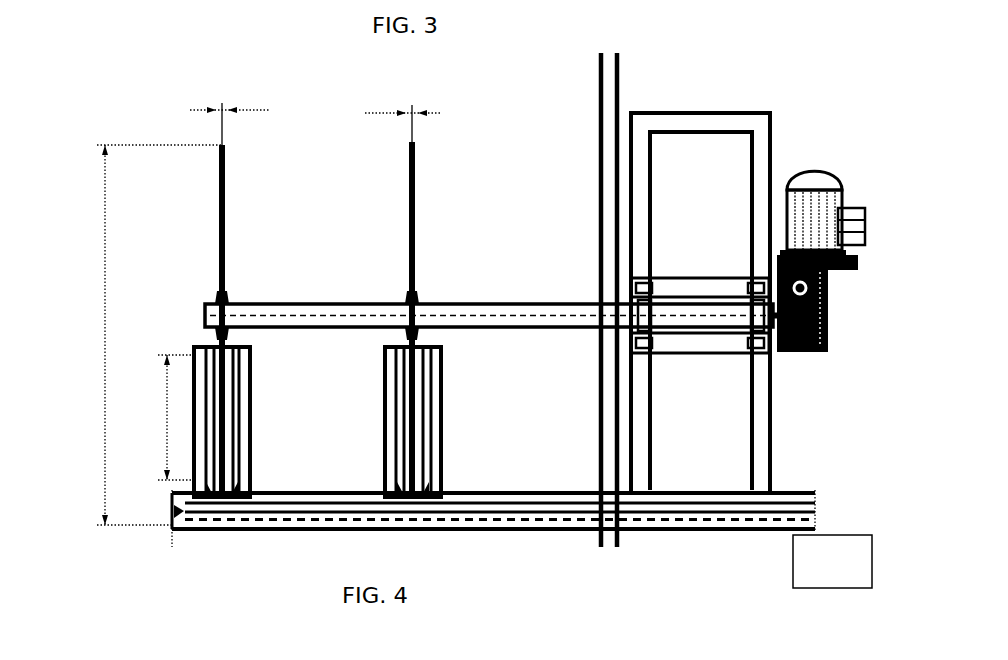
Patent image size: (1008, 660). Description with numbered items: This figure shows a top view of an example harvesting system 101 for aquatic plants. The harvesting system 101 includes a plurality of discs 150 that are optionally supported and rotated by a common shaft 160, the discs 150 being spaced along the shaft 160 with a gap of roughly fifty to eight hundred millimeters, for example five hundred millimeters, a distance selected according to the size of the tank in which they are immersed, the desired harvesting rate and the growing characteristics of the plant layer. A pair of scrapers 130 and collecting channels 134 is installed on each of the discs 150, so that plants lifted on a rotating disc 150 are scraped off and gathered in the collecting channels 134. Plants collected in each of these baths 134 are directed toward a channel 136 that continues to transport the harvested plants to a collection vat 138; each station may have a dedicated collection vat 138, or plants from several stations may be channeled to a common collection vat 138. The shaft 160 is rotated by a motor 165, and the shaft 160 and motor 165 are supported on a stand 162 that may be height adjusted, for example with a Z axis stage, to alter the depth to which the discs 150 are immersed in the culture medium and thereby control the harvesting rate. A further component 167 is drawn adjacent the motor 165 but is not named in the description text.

The ozonation system 101 is at (209, 86).
The electrode assembly 130 is at (212, 425).
The electrode plate 134 is at (240, 458).
The base plate 136 is at (300, 530).
The controller 138 is at (793, 538).
The support rod 150 is at (410, 222).
The cross beam 160 is at (205, 318).
The frame 162 is at (768, 447).
The gearbox 165 is at (830, 296).
The motor 167 is at (845, 200).